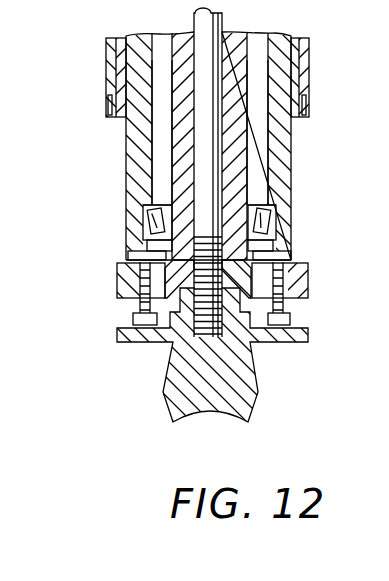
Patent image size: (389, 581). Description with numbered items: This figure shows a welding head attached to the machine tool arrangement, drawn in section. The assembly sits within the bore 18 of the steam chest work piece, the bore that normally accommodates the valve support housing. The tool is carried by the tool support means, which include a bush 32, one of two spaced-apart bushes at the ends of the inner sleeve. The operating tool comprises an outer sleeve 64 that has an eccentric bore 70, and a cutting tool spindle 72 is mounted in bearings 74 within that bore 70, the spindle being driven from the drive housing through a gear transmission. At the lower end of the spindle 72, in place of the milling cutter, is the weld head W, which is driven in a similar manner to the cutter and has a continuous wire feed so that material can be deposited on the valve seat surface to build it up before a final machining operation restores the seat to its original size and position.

The bore 18 is at (104, 57).
The bush 32 is at (310, 73).
The outer sleeve 64 is at (127, 164).
The eccentric bore 70 is at (255, 185).
The cutting tool spindle 72 is at (247, 108).
The bearings 74 is at (273, 214).
The weld head W is at (260, 386).